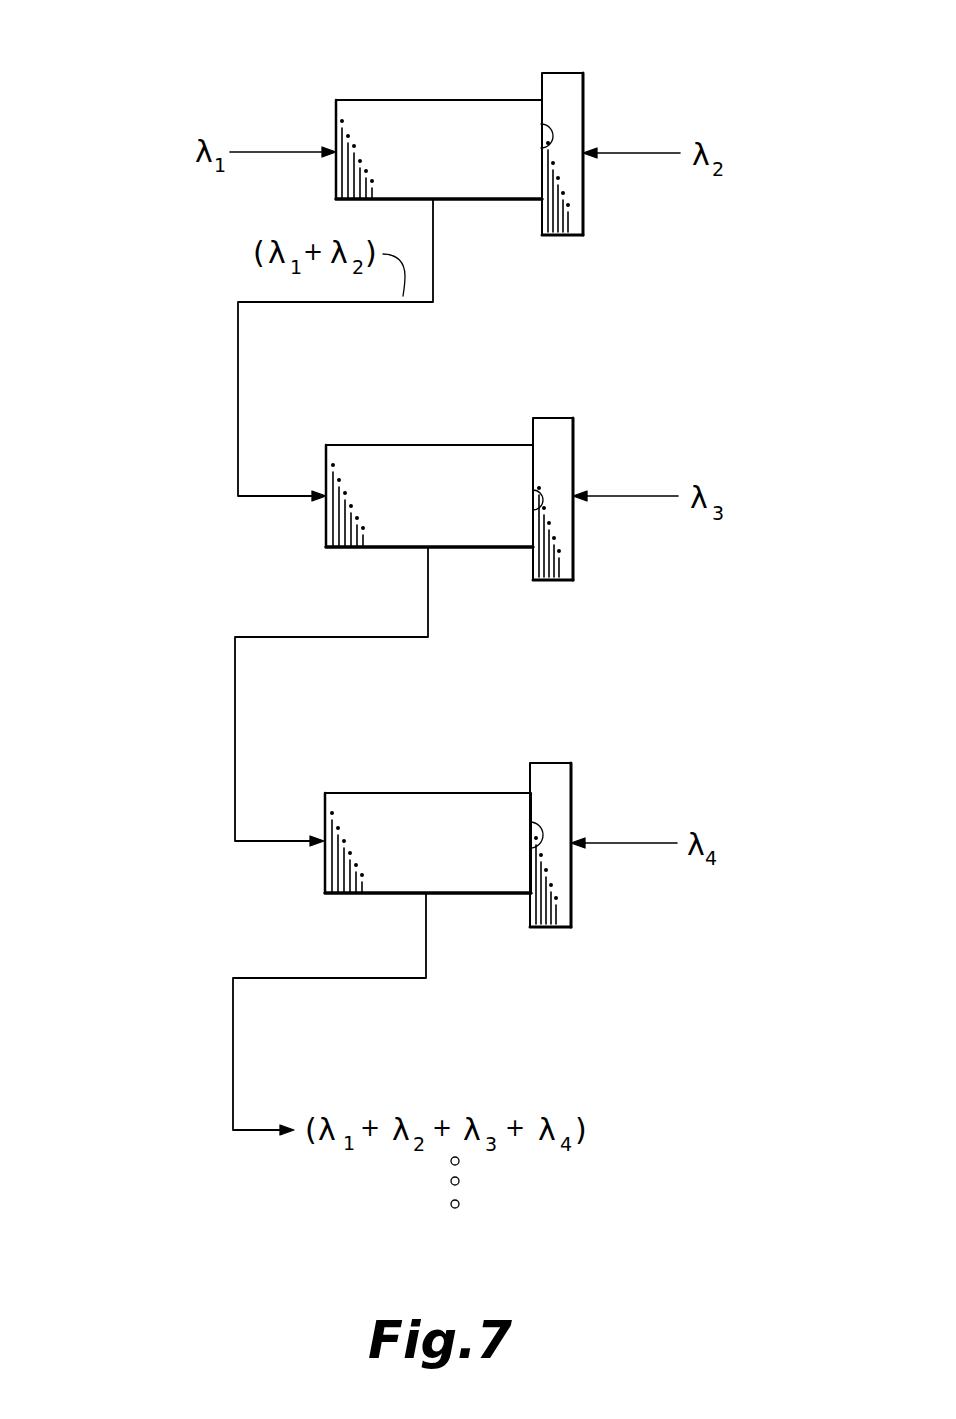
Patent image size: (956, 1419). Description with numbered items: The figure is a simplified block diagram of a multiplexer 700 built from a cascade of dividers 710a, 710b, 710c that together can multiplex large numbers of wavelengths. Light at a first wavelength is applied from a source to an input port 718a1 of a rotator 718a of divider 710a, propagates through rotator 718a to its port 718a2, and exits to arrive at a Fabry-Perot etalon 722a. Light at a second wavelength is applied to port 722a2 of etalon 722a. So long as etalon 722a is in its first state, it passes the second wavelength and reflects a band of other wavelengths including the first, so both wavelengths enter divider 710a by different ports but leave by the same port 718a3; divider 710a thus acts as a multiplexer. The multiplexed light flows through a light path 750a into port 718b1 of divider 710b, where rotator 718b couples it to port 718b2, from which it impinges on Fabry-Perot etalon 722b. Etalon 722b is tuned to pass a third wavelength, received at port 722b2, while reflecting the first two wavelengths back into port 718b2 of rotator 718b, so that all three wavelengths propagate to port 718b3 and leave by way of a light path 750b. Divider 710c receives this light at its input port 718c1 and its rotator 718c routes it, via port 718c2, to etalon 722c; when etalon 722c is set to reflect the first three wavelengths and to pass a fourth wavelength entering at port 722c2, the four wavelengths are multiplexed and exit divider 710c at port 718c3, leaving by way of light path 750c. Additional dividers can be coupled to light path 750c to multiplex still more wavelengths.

The multiplexer 700 is at (122, 1200).
The divider 710a is at (458, 39).
The divider 710b is at (463, 382).
The divider 710c is at (468, 730).
The rotator 718a is at (432, 100).
The rotator 718b is at (437, 445).
The rotator 718c is at (441, 793).
The input port 718a1 is at (337, 115).
The port 718a2 is at (541, 124).
The port 718a3 is at (475, 202).
The port 718b1 is at (326, 463).
The port 718b2 is at (533, 492).
The port 718b3 is at (460, 548).
The input port 718c1 is at (325, 817).
The port 718c2 is at (530, 822).
The port 718c3 is at (453, 895).
The Fabry-Perot etalon 722a is at (571, 73).
The Fabry-Perot etalon 722b is at (559, 418).
The etalon 722c is at (553, 763).
The port 722a2 is at (583, 121).
The port 722b2 is at (573, 466).
The port 722c2 is at (571, 808).
The light path 750a is at (433, 283).
The light path 750b is at (428, 630).
The light path 750c is at (426, 972).